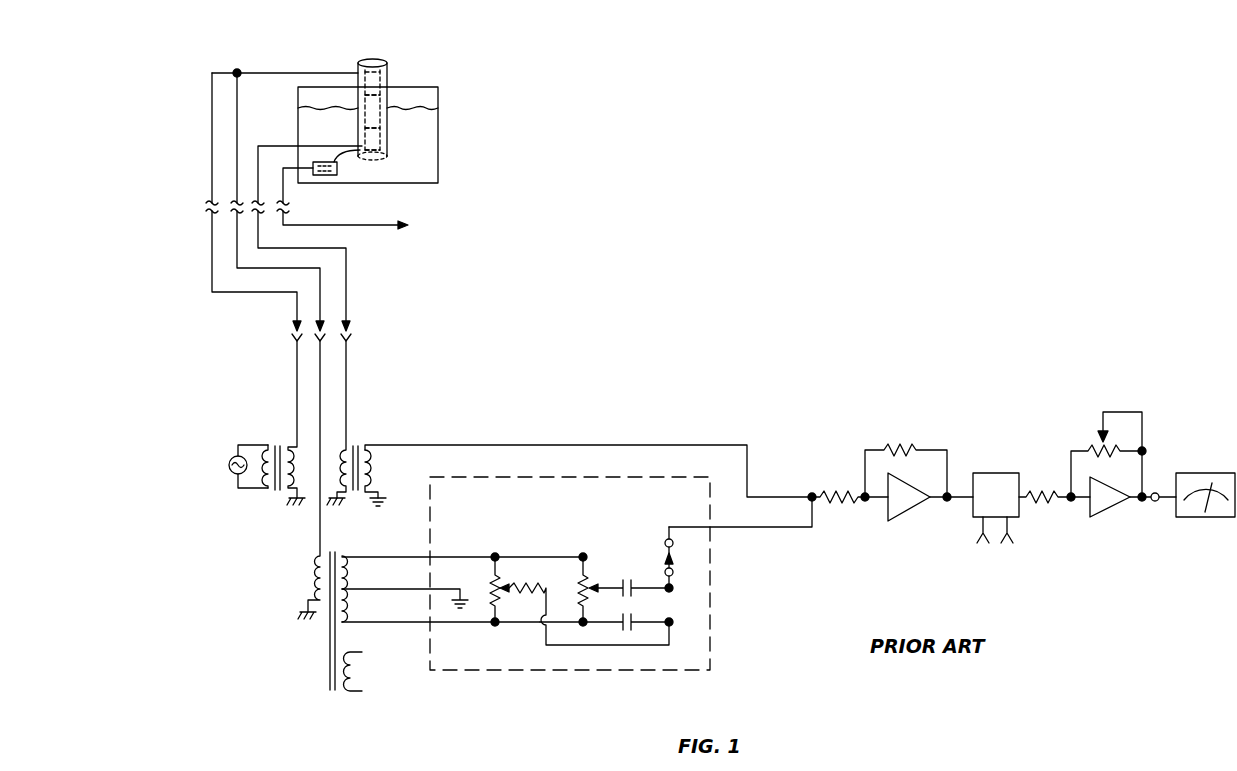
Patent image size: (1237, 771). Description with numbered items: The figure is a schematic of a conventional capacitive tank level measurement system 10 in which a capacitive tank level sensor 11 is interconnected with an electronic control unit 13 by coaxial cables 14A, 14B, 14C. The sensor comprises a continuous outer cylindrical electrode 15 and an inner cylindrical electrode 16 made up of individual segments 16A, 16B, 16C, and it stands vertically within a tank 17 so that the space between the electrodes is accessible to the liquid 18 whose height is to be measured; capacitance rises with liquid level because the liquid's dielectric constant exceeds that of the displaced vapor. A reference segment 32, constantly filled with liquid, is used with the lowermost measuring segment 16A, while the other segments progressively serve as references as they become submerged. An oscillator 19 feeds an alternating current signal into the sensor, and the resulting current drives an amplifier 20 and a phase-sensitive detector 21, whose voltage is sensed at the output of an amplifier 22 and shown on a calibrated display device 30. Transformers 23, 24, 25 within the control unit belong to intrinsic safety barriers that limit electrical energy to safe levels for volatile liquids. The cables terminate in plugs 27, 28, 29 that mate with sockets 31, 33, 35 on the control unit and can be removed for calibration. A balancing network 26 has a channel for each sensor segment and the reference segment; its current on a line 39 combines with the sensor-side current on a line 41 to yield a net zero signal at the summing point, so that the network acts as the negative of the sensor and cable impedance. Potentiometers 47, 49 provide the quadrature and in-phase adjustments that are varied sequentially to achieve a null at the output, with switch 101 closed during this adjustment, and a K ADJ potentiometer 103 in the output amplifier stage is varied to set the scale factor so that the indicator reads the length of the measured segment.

The tank level measurement system 10 is at (814, 167).
The capacitive tank level sensor 11 is at (380, 56).
The electronic control unit 13 is at (558, 393).
The coaxial cable 14A is at (208, 80).
The coaxial cable 14B is at (236, 106).
The coaxial cable 14C is at (257, 152).
The outer cylindrical electrode 15 is at (358, 64).
The inner cylindrical electrode 16 is at (385, 70).
The sensor segment 16A is at (380, 157).
The sensor segment 16B is at (388, 120).
The sensor segment 16C is at (385, 100).
The tank 17 is at (438, 92).
The liquid 18 is at (420, 172).
The oscillator 19 is at (232, 458).
The amplifier 20 is at (895, 519).
The phase-sensitive detector 21 is at (1000, 473).
The amplifier 22 is at (1095, 519).
The transformer 23 is at (285, 447).
The transformer 24 is at (356, 448).
The transformer 25 is at (318, 562).
The balancing network 26 is at (625, 676).
The plug 27 is at (293, 326).
The plug 28 is at (326, 325).
The plug 29 is at (352, 327).
The display device 30 is at (1208, 520).
The socket 31 is at (294, 343).
The reference segment 32 is at (323, 176).
The socket 33 is at (318, 343).
The socket 35 is at (348, 343).
The line 39 is at (790, 527).
The line 41 is at (585, 445).
The potentiometer 47 is at (525, 585).
The potentiometer 49 is at (598, 588).
The switch 101 is at (675, 565).
The K ADJ potentiometer 103 is at (1100, 425).